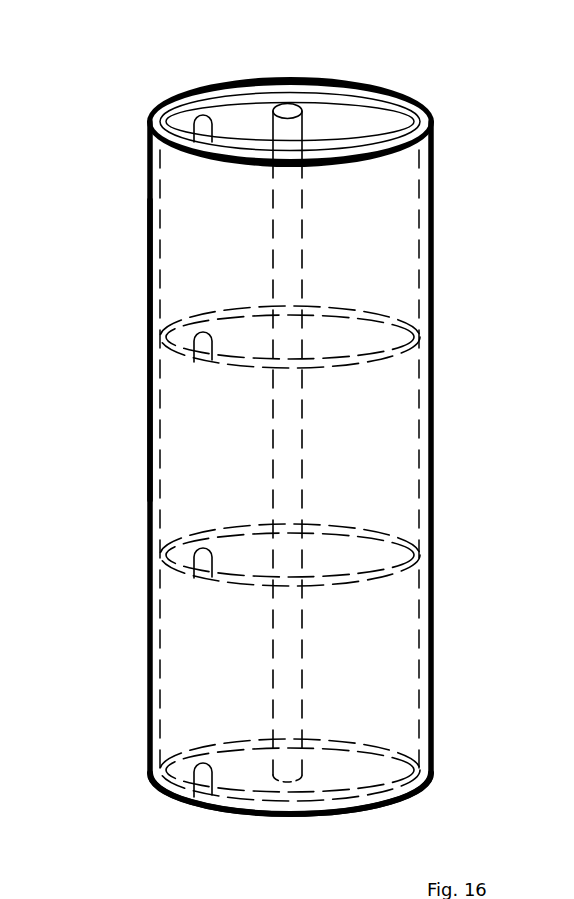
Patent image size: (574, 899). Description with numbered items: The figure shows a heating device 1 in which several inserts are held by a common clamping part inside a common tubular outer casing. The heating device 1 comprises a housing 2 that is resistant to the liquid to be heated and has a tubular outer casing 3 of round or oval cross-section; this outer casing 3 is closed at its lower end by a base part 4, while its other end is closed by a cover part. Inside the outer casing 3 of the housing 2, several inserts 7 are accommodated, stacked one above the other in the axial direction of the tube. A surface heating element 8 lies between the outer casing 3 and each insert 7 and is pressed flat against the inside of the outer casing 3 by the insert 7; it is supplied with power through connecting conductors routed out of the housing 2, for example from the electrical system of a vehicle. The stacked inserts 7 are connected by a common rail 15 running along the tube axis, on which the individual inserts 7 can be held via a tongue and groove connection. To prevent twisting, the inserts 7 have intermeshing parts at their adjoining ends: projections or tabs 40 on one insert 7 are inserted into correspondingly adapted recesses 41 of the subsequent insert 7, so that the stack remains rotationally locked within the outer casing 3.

The heating device 1 is at (170, 60).
The housing 2 is at (450, 452).
The tubular outer casing 3 is at (147, 373).
The base part 4 is at (412, 800).
The insert 7 is at (418, 211).
The surface heating element 8 is at (162, 193).
The common rail 15 is at (286, 143).
The tab 40 is at (187, 136).
The recess 41 is at (195, 355).